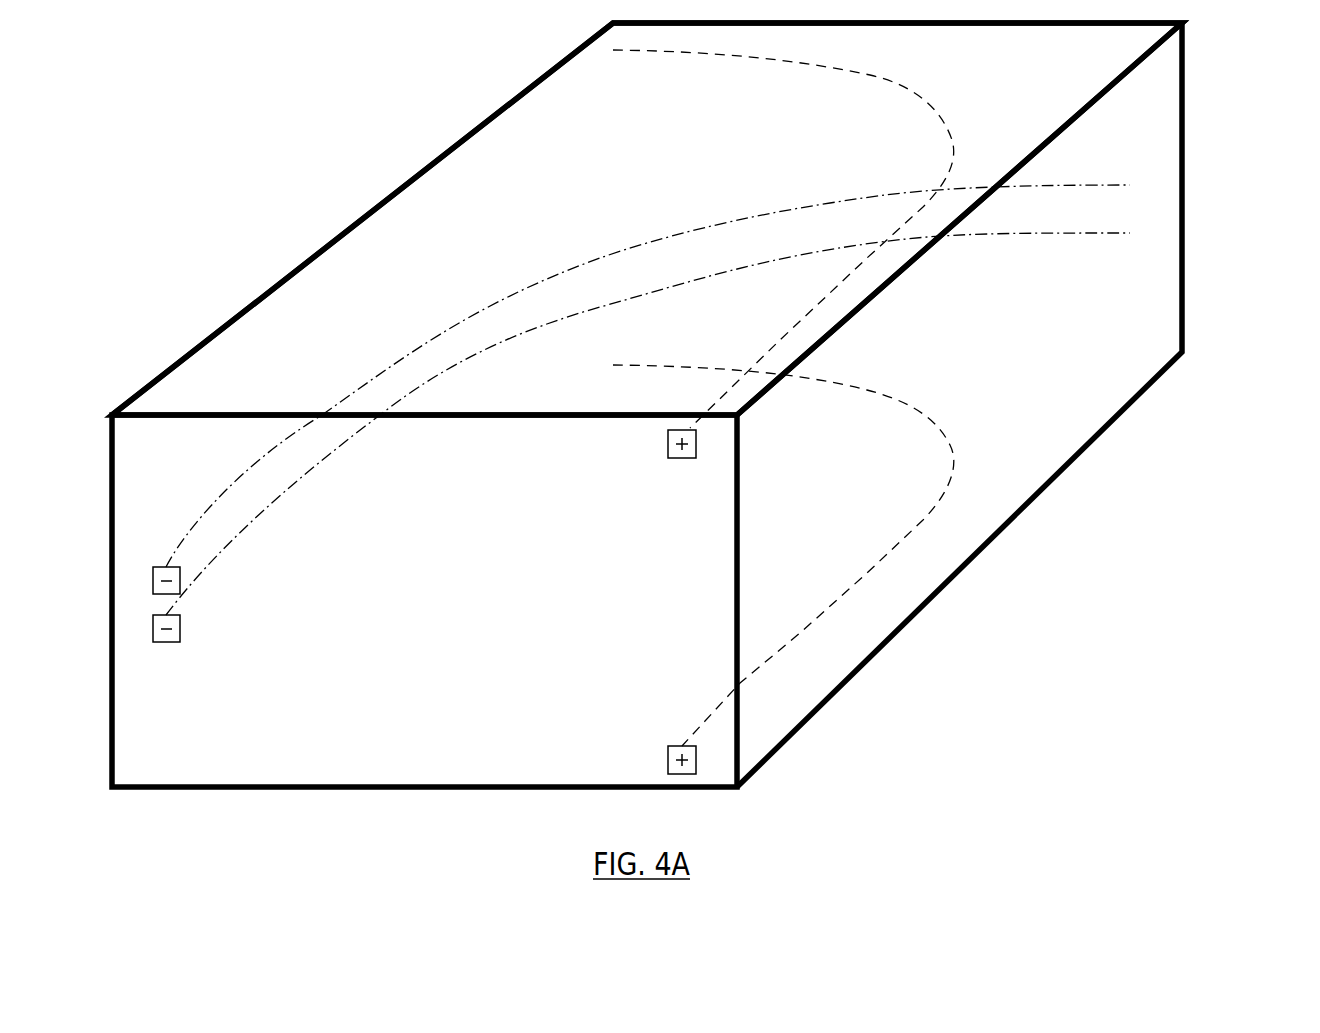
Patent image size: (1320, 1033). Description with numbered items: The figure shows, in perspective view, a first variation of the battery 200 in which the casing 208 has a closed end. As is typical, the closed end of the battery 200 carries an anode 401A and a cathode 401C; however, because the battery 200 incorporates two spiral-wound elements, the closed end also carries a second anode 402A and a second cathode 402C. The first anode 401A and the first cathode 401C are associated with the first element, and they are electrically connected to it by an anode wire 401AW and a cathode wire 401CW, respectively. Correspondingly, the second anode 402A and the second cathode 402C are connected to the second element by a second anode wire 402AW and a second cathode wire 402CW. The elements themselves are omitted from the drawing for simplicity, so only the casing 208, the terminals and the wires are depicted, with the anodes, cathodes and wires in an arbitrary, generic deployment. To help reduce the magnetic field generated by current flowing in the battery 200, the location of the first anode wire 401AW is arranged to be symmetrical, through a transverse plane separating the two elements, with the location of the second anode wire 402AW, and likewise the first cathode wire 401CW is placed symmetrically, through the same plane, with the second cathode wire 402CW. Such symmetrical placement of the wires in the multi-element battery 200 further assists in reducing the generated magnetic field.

The battery 200 is at (1210, 160).
The casing 208 is at (661, 177).
The anode wire 401AW is at (890, 75).
The second anode wire 402AW is at (923, 520).
The cathode wire 401CW is at (640, 245).
The second cathode wire 402CW is at (288, 483).
The anode 401A is at (668, 447).
The second anode 402A is at (668, 759).
The cathode 401C is at (180, 578).
The second cathode 402C is at (180, 628).